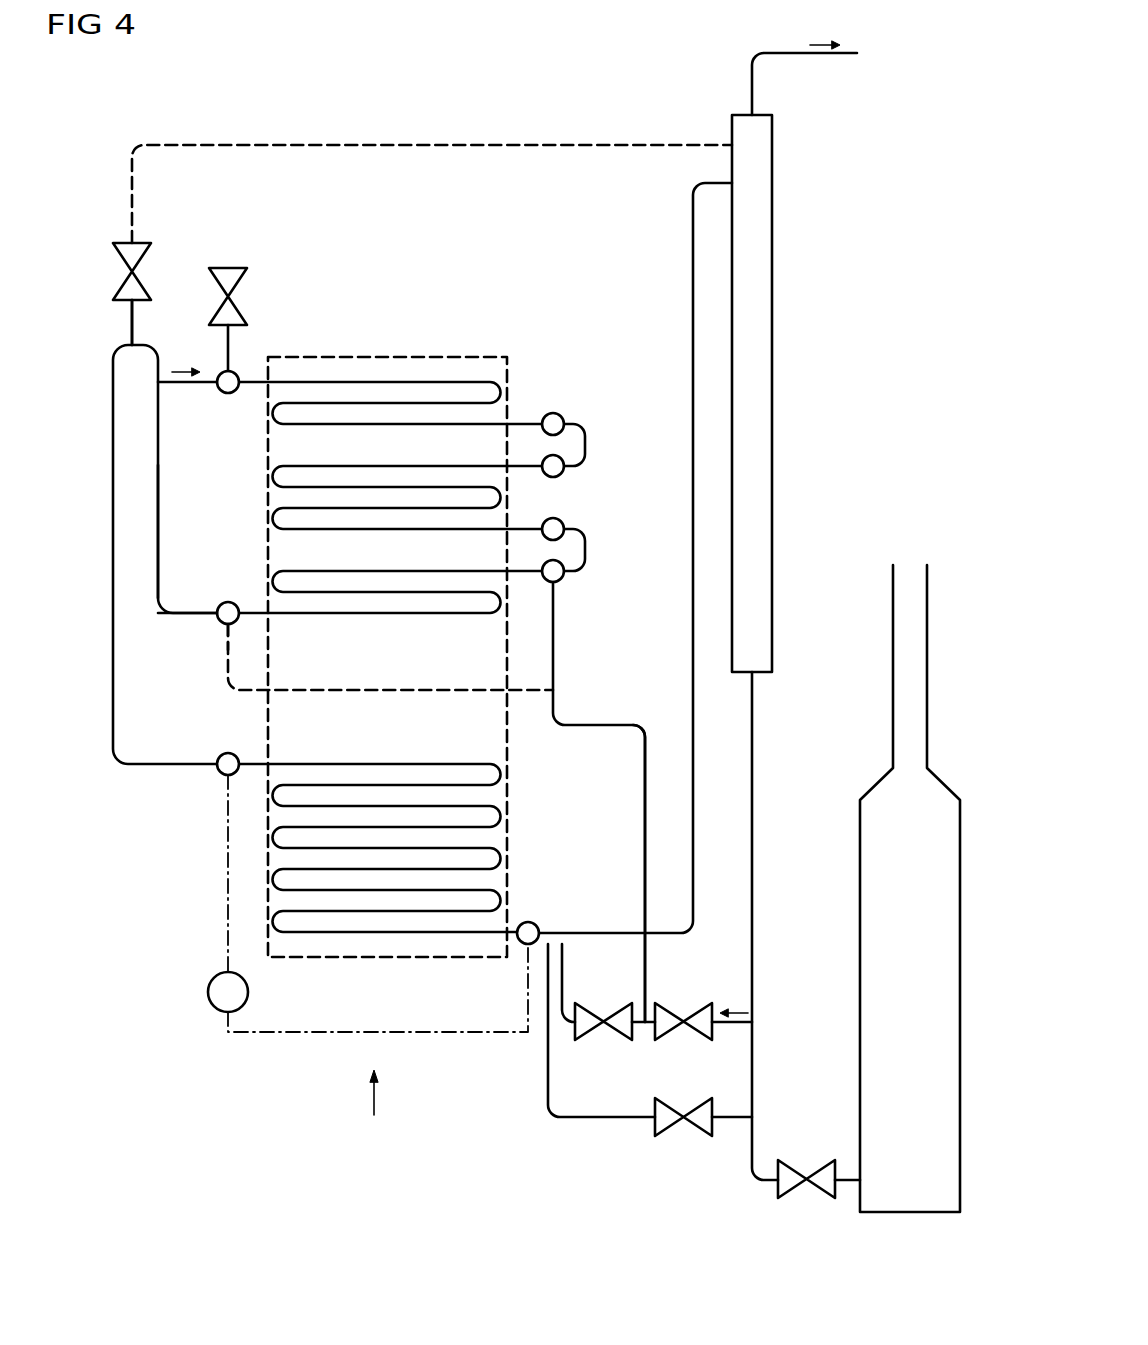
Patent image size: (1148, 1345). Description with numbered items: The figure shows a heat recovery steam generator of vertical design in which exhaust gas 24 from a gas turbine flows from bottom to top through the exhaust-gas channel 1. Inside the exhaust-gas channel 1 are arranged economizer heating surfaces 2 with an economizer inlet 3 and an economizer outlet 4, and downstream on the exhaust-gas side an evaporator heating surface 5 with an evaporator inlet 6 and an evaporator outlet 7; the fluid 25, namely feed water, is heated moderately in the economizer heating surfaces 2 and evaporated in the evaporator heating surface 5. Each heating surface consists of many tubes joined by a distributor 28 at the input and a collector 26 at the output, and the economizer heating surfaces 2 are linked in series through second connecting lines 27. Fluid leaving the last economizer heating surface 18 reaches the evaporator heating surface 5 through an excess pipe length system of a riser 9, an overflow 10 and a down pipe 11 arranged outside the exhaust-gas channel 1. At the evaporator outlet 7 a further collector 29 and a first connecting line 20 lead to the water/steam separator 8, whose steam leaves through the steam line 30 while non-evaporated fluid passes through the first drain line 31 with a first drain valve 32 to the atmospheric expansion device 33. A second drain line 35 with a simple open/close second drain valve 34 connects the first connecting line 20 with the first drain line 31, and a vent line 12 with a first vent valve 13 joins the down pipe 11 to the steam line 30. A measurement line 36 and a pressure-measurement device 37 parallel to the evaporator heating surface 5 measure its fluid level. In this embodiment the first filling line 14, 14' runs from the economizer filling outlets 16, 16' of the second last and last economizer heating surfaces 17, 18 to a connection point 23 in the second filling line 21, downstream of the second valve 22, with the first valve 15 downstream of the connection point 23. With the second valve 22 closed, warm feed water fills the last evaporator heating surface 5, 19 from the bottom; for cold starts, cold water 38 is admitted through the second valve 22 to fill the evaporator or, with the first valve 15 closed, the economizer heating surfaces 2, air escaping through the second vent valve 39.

The exhaust-gas channel 1 is at (415, 357).
The economizer heating surface 2 is at (283, 413).
The economizer inlet 3 is at (232, 372).
The economizer outlet 4 is at (225, 602).
The evaporator heating surface 5 is at (328, 848).
The evaporator inlet 6 is at (228, 775).
The evaporator outlet 7 is at (557, 898).
The water/steam separator 8 is at (772, 432).
The riser 9 is at (158, 465).
The overflow 10 is at (128, 345).
The down pipe 11 is at (113, 440).
The vent line 12 is at (410, 144).
The first vent valve 13 is at (143, 259).
The first filling line 14 is at (594, 873).
The first filling line 14' is at (390, 655).
The first valve 15 is at (615, 1032).
The economizer filling outlet 16 is at (599, 801).
The economizer filling outlet 16' is at (199, 659).
The second last economizer heating surface 17 is at (283, 518).
The last economizer heating surface 18 is at (283, 578).
The last evaporator heating surface 19 is at (283, 877).
The first connecting line 20 is at (693, 618).
The second filling line 21 is at (572, 1025).
The second valve 22 is at (700, 1003).
The connection point 23 is at (645, 1032).
The exhaust gas 24 is at (372, 1107).
The fluid 25 is at (182, 382).
The collector 26 is at (553, 412).
The second connecting line 27 is at (585, 445).
The distributor 28 is at (564, 474).
The further collector 29 is at (530, 922).
The steam line 30 is at (752, 80).
The first drain line 31 is at (752, 772).
The first drain valve 32 is at (820, 1195).
The atmospheric expansion device 33 is at (910, 1212).
The second drain valve 34 is at (700, 1130).
The second drain line 35 is at (602, 1120).
The measurement line 36 is at (228, 937).
The pressure-measurement device 37 is at (208, 992).
The cold water 38 is at (730, 1027).
The second vent valve 39 is at (239, 281).